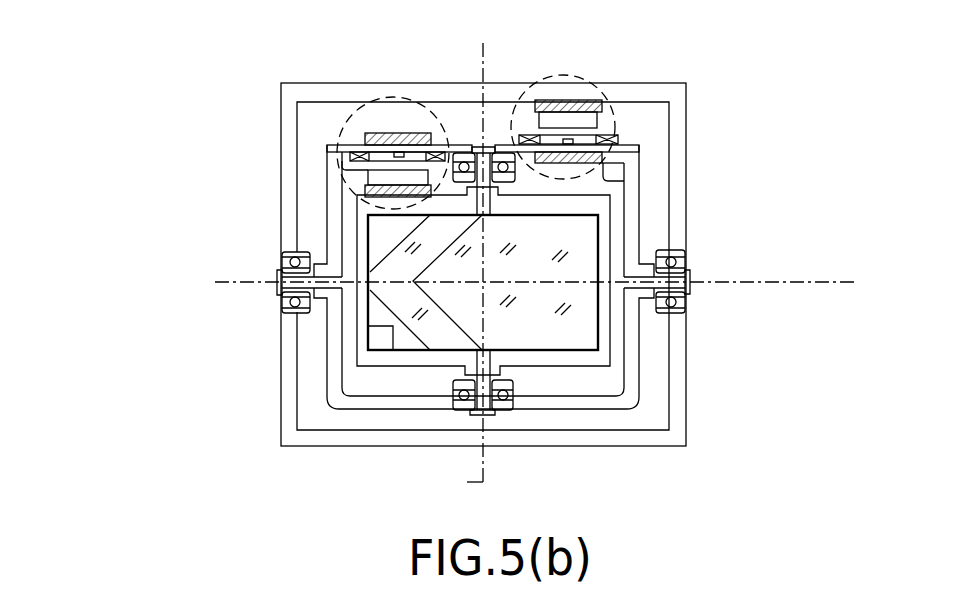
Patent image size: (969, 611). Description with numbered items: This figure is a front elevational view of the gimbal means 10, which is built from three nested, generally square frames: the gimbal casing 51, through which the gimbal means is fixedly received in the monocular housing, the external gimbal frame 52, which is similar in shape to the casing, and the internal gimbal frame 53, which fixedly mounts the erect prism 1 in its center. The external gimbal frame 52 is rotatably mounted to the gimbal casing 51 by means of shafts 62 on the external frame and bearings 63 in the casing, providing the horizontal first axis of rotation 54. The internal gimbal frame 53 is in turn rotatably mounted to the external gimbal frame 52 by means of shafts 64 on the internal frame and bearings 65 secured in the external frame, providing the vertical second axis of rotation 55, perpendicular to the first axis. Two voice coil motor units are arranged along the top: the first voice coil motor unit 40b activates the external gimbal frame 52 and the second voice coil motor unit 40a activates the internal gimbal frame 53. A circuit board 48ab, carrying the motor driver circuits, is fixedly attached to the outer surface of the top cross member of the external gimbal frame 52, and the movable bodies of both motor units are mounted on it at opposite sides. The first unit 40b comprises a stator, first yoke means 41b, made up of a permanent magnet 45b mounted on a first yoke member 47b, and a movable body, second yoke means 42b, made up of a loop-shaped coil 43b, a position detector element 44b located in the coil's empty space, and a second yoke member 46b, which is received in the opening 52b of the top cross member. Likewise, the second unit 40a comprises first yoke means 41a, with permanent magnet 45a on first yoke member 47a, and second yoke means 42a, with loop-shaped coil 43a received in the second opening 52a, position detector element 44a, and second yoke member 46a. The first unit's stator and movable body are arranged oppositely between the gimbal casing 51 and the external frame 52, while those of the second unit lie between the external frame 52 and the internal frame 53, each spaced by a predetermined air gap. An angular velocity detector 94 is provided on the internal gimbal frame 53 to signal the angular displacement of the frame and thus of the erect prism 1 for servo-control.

The erect prism 1 is at (544, 325).
The gimbal means 10 is at (474, 307).
The second voice coil motor unit 40a is at (350, 98).
The first voice coil motor unit 40b is at (560, 78).
The first yoke means 41a is at (275, 221).
The first yoke means 41b is at (673, 71).
The second yoke means 42a is at (462, 97).
The second yoke means 42b is at (689, 155).
The loop-shaped coil 43a is at (335, 148).
The loop-shaped coil 43b is at (635, 146).
The position detector element 44a is at (400, 133).
The position detector element 44b is at (600, 133).
The permanent magnet 45a is at (372, 177).
The permanent magnet 45b is at (600, 122).
The second yoke member 46a is at (392, 150).
The second yoke member 46b is at (565, 168).
The first yoke member 47a is at (380, 190).
The first yoke member 47b is at (618, 110).
The circuit board 48ab is at (393, 154).
The gimbal casing 51 is at (677, 378).
The external gimbal frame 52 is at (632, 383).
The second opening 52a is at (346, 176).
The opening 52b is at (625, 180).
The internal gimbal frame 53 is at (587, 362).
The first axis of rotation 54 is at (715, 280).
The second axis of rotation 55 is at (470, 482).
The shafts 62 is at (280, 286).
The bearings 63 is at (282, 304).
The shafts 64 is at (481, 146).
The bearings 65 is at (510, 153).
The angular velocity detector 94 is at (375, 342).